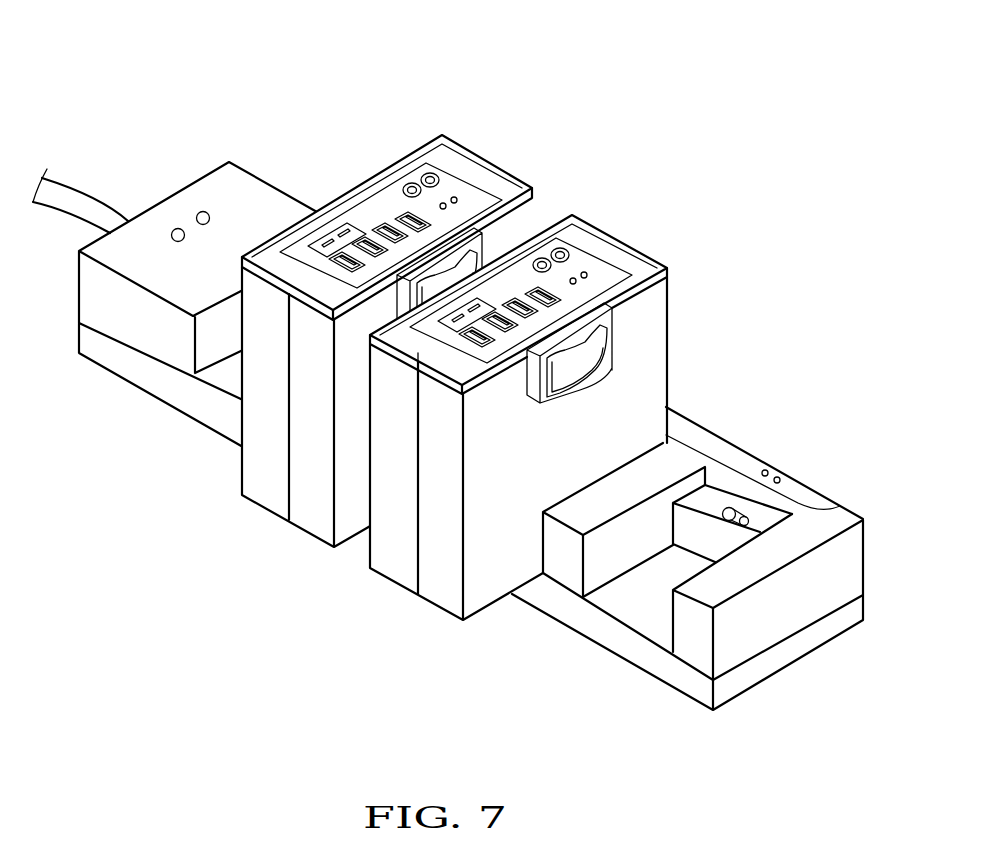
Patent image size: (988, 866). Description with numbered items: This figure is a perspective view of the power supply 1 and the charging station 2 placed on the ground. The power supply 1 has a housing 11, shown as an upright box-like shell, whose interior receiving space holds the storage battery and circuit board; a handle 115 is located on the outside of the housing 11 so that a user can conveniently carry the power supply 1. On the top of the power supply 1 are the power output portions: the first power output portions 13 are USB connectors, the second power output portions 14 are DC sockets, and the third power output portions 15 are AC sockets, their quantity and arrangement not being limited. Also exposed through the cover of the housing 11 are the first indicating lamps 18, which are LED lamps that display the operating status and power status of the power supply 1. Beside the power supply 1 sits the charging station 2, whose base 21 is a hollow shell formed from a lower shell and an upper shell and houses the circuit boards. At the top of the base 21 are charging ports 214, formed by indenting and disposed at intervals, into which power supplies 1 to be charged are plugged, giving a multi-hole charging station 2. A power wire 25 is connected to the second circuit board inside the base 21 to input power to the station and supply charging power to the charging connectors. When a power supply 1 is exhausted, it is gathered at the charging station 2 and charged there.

The power supply 1 is at (603, 222).
The housing 11 is at (392, 565).
The first power output portions 13 is at (540, 292).
The second power output portions 14 is at (560, 250).
The third power output portions 15 is at (308, 283).
The first indicating lamps 18 is at (590, 274).
The handle 115 is at (612, 338).
The charging station 2 is at (250, 166).
The base 21 is at (137, 347).
The power wire 25 is at (80, 200).
The charging ports 214 is at (748, 505).